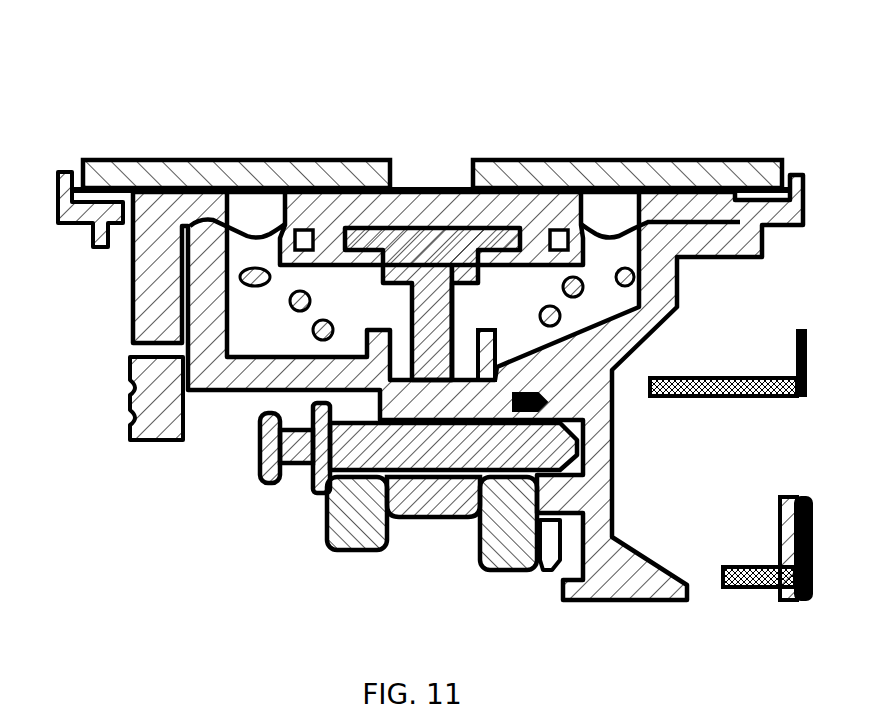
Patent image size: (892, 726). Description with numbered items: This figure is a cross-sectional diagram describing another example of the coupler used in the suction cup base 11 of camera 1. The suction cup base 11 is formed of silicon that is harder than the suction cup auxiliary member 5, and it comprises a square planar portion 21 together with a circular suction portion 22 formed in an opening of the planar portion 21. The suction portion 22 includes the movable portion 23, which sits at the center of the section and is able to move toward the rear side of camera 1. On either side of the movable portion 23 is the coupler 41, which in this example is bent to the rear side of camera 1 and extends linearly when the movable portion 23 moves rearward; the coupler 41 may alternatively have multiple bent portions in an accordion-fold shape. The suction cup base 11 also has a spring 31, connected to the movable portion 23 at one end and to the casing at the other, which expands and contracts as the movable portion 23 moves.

The camera 1 is at (435, 300).
The suction cup auxiliary member 5 is at (343, 151).
The suction cup base 11 is at (208, 463).
The planar portion 21 is at (178, 192).
The suction portion 22 is at (465, 190).
The movable portion 23 is at (432, 226).
The spring 31 is at (562, 330).
The coupler 41 is at (256, 222).